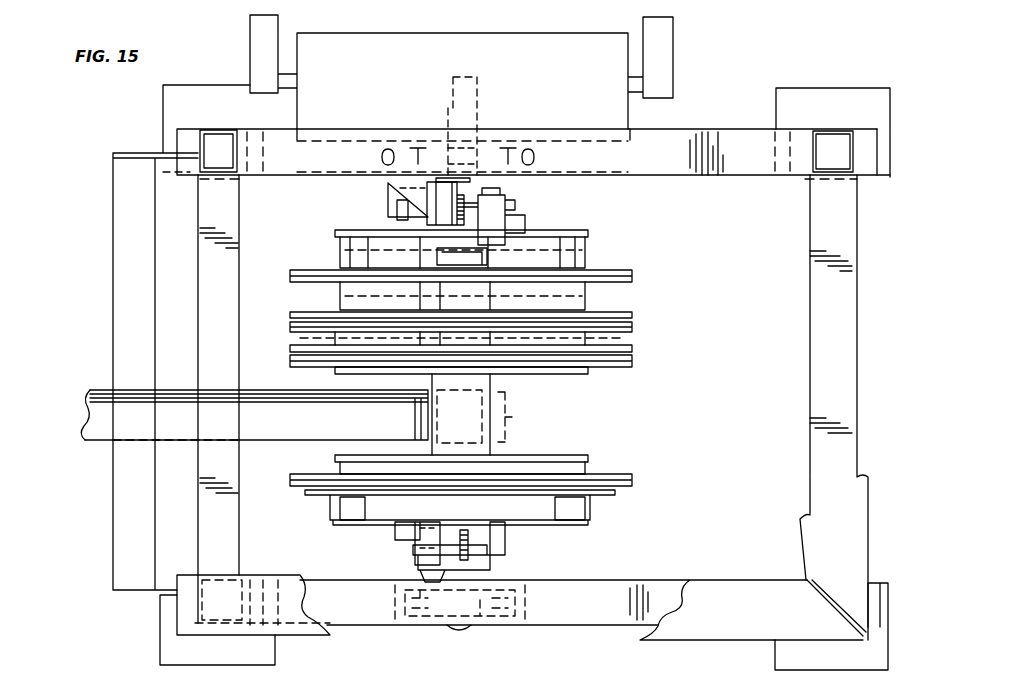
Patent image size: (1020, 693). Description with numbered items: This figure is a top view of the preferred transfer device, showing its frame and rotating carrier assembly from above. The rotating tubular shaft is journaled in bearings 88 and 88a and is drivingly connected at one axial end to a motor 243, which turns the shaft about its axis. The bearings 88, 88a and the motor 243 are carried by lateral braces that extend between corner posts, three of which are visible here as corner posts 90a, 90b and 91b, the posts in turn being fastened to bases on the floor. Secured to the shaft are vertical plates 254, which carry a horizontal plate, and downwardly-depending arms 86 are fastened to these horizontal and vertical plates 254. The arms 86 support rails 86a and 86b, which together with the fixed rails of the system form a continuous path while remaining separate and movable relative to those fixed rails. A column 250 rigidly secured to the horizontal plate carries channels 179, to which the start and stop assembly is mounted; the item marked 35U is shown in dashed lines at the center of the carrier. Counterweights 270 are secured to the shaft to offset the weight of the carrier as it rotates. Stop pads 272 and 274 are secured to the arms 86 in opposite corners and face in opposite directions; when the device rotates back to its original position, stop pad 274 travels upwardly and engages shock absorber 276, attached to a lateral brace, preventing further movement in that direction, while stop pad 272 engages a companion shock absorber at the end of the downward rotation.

The motor 243 is at (496, 33).
The bearing 88a is at (486, 105).
The bearing 88 is at (446, 629).
The shock absorber 276 is at (440, 178).
The stop pad 274 is at (482, 190).
The stop pad 272 is at (478, 548).
The vertical plate 254 is at (576, 232).
The counterweight 270 is at (592, 258).
The rail 86a is at (642, 282).
The rail 86b is at (638, 485).
The downwardly-depending arm 86 is at (336, 504).
The column 250 is at (620, 315).
The channel 179 is at (290, 320).
The workpiece unit 35U is at (514, 415).
The corner post 90a is at (245, 580).
The corner post 90b is at (222, 132).
The corner post 91b is at (838, 163).